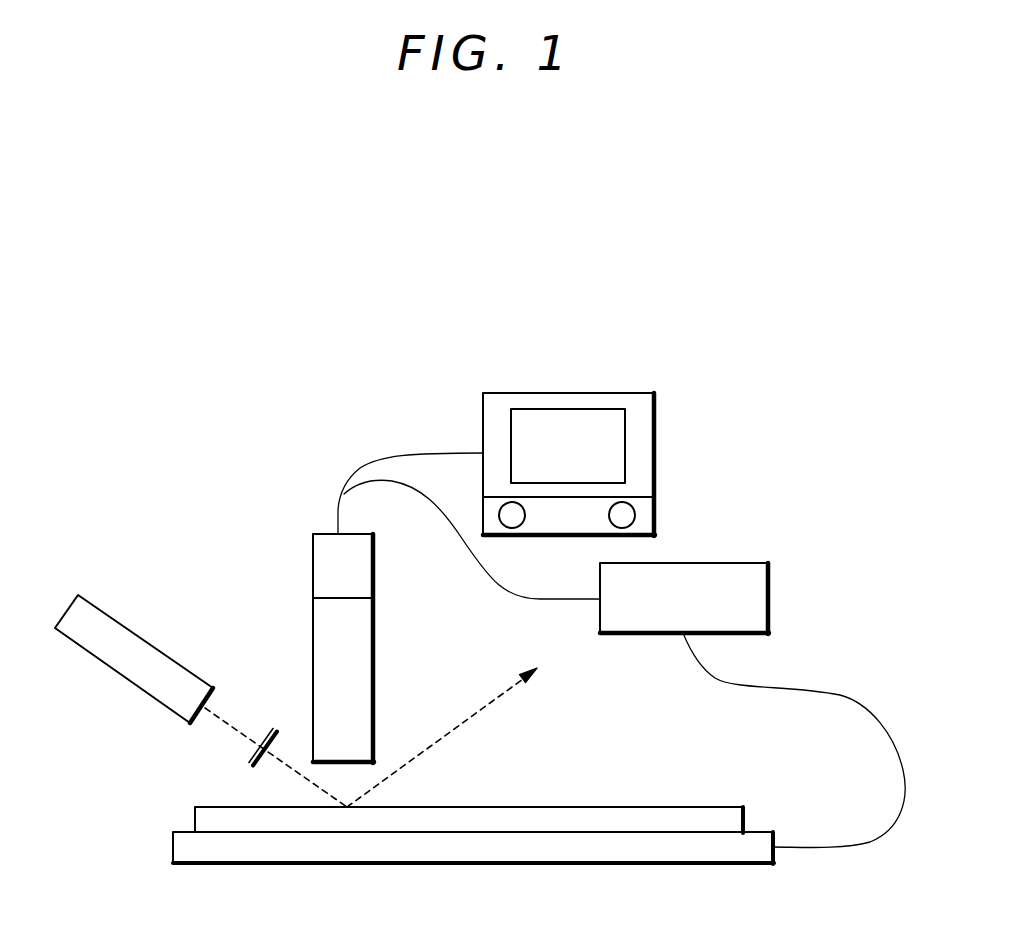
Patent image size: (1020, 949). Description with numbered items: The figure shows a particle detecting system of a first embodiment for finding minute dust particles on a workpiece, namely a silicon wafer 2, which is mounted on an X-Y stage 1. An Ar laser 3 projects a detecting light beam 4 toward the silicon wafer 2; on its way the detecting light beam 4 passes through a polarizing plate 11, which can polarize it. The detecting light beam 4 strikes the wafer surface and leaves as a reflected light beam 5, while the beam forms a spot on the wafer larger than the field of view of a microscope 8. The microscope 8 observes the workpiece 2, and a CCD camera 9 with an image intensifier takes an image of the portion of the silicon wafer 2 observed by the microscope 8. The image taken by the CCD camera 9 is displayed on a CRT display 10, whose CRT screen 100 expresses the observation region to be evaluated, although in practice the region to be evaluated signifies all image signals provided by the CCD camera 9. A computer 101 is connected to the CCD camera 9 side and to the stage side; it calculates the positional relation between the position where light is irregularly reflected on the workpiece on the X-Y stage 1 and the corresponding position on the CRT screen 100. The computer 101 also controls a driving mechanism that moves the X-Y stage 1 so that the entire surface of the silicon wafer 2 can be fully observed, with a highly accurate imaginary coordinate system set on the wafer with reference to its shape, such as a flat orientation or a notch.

The X-Y stage 1 is at (776, 832).
The workpiece (silicon wafer) 2 is at (746, 816).
The Ar laser 3 is at (142, 690).
The detecting light beam 4 is at (297, 771).
The reflected light beam 5 is at (447, 737).
The microscope 8 is at (313, 685).
The CCD camera 9 is at (312, 570).
The CRT display 10 is at (620, 452).
The polarizing plate 11 is at (250, 750).
The CRT screen 100 is at (642, 414).
The computer 101 is at (770, 577).